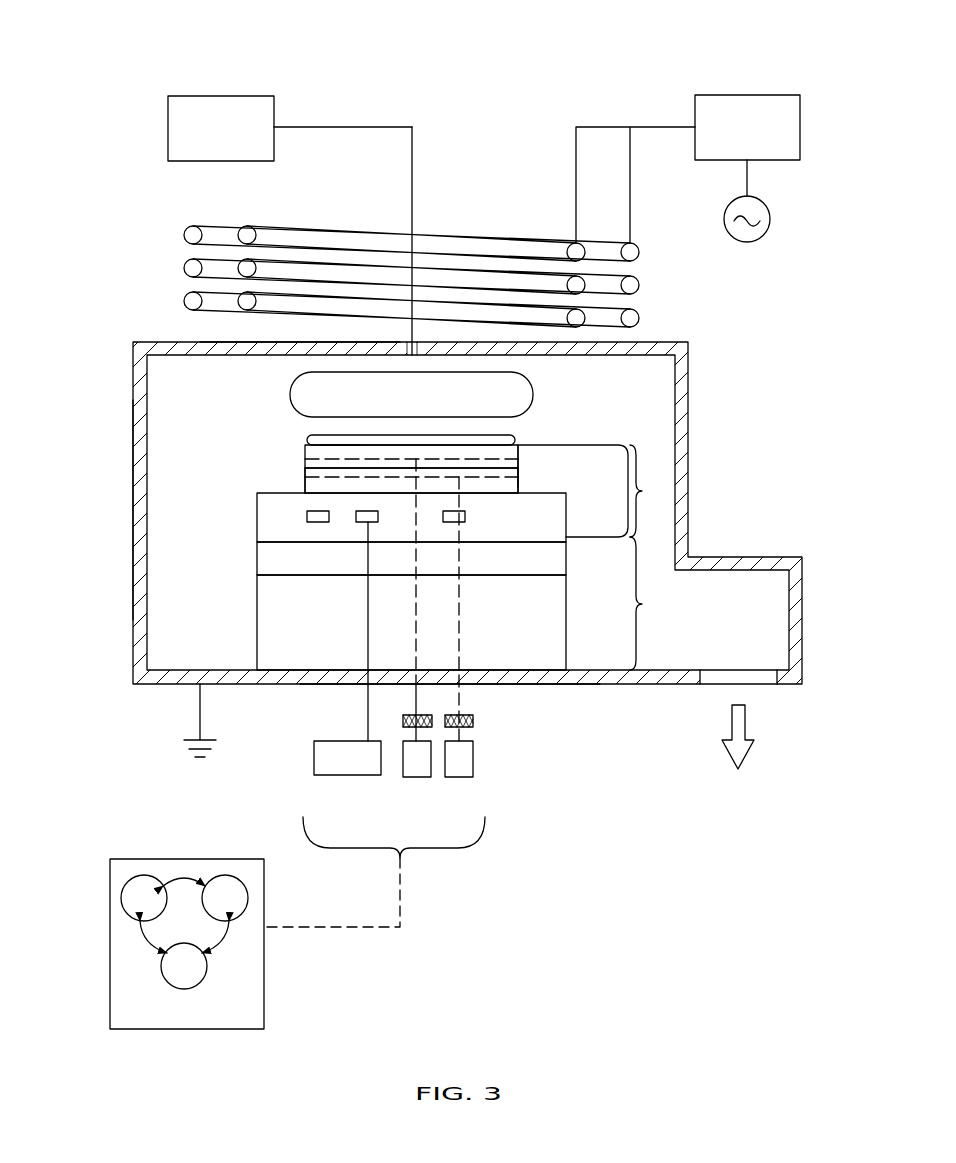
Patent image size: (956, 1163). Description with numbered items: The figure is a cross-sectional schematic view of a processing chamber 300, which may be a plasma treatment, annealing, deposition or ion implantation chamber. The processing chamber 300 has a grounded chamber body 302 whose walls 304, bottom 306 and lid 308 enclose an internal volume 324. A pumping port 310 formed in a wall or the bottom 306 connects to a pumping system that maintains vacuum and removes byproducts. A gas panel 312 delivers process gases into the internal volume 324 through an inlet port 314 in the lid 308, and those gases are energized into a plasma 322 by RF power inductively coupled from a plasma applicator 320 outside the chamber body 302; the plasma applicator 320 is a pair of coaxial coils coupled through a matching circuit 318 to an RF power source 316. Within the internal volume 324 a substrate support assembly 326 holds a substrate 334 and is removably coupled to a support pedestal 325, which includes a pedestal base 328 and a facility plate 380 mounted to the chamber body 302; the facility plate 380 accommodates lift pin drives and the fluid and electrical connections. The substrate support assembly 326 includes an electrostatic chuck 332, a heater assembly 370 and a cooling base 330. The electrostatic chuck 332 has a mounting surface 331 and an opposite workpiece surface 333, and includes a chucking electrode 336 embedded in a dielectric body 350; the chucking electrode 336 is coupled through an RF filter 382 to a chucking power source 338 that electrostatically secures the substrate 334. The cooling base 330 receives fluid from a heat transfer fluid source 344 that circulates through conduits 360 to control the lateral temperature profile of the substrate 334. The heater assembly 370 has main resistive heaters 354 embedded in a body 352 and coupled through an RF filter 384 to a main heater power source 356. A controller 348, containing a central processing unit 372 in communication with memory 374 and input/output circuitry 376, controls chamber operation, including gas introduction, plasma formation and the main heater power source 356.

The processing chamber 300 is at (556, 44).
The chamber body 302 is at (686, 417).
The walls 304 is at (133, 391).
The bottom 306 is at (603, 684).
The lid 308 is at (201, 342).
The pumping port 310 is at (760, 684).
The gas panel 312 is at (220, 96).
The inlet port 314 is at (408, 342).
The RF power source 316 is at (771, 213).
The matching circuit 318 is at (749, 95).
The plasma applicator 320 is at (640, 284).
The plasma 322 is at (411, 394).
The internal volume 324 is at (612, 395).
The support pedestal 325 is at (653, 603).
The substrate support assembly 326 is at (653, 491).
The pedestal base 328 is at (257, 607).
The cooling base 330 is at (257, 514).
The mounting surface 331 is at (335, 472).
The electrostatic chuck 332 is at (305, 457).
The workpiece surface 333 is at (335, 444).
The substrate 334 is at (311, 440).
The chucking electrode 336 is at (510, 457).
The chucking power source 338 is at (417, 777).
The heat transfer fluid source 344 is at (343, 775).
The controller 348 is at (266, 939).
The dielectric body 350 is at (502, 444).
The body 352 is at (305, 484).
The main resistive heaters 354 is at (512, 477).
The main heater power source 356 is at (459, 777).
The conduits 360 is at (318, 522).
The heater assembly 370 is at (518, 484).
The central processing unit 372 is at (144, 898).
The memory 374 is at (225, 898).
The input/output circuitry 376 is at (184, 966).
The facility plate 380 is at (566, 560).
The RF filter 382 is at (403, 721).
The RF filter 384 is at (445, 721).